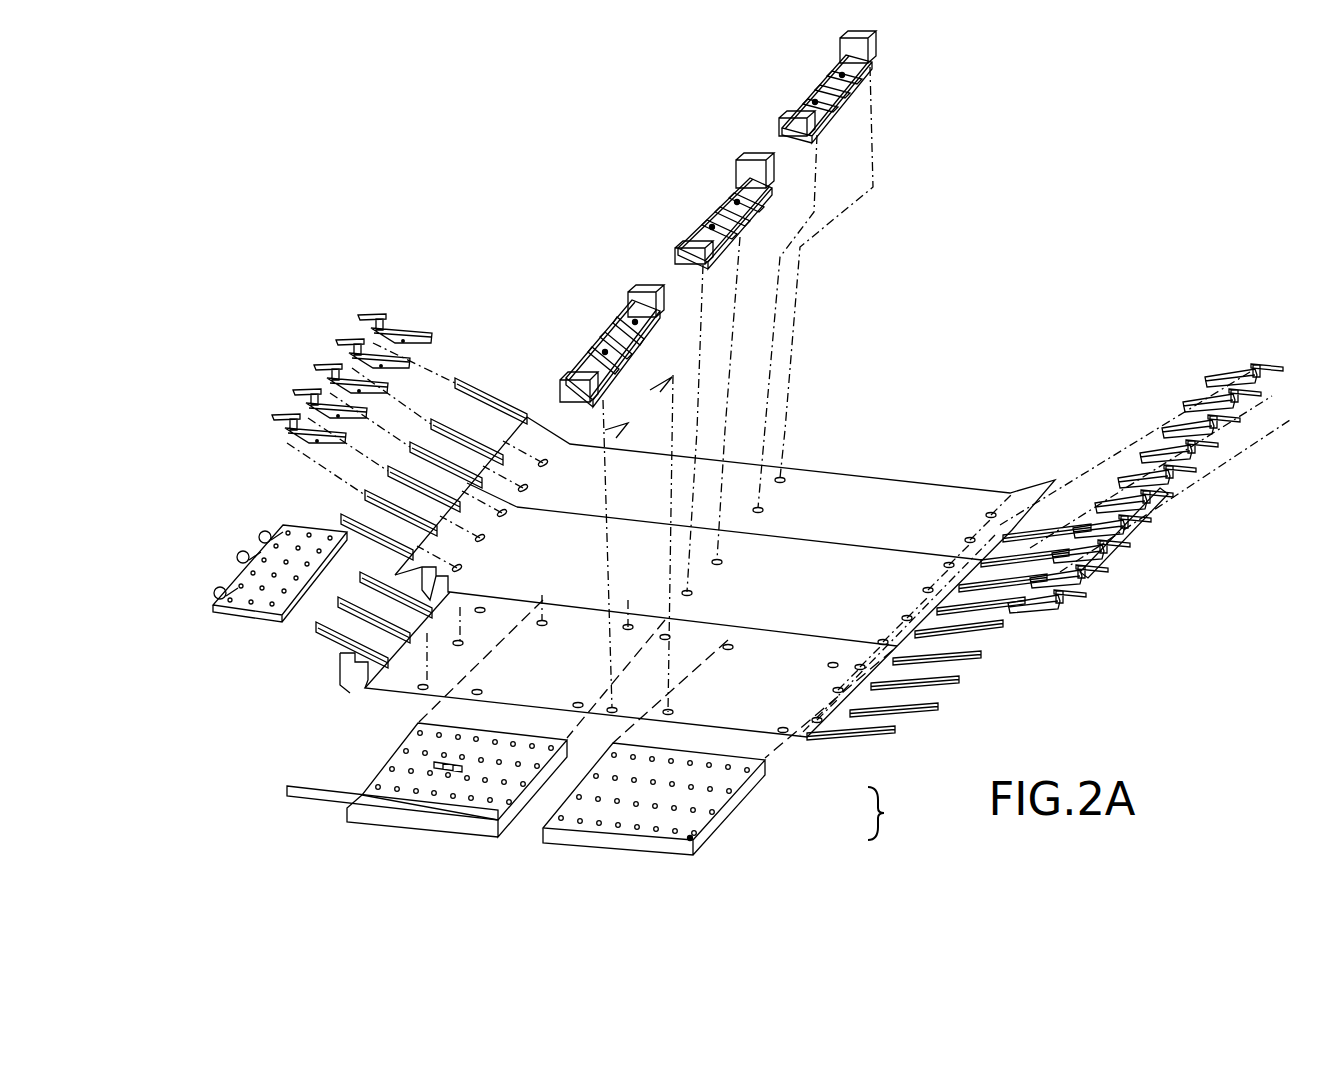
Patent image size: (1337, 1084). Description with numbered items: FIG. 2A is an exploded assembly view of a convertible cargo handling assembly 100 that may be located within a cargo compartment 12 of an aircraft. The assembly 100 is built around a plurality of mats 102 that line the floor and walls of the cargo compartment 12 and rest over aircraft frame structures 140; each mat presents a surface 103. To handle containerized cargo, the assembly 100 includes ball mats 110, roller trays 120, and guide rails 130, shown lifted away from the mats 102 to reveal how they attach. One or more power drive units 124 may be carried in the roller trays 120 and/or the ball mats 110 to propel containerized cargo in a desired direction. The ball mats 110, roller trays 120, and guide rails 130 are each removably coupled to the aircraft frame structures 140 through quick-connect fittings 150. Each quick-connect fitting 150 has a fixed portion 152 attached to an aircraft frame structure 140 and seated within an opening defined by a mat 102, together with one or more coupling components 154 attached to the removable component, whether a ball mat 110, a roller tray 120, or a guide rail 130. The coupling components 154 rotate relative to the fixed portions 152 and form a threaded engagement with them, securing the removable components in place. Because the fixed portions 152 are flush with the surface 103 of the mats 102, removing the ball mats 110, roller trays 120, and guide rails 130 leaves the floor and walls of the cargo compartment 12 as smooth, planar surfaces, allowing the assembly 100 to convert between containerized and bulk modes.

The cargo compartment 12 is at (336, 238).
The convertible cargo handling assembly 100 is at (502, 220).
The mats 102 is at (892, 482).
The surface of mats 103 is at (830, 518).
The ball mats 110 is at (245, 612).
The roller trays 120 is at (585, 352).
The power drive units 124 is at (612, 325).
The guide rails 130 is at (405, 330).
The aircraft frame structures 140 is at (480, 385).
The quick-connect fittings 150 is at (893, 813).
The fixed portion 152 is at (782, 478).
The coupling components 154 is at (620, 308).